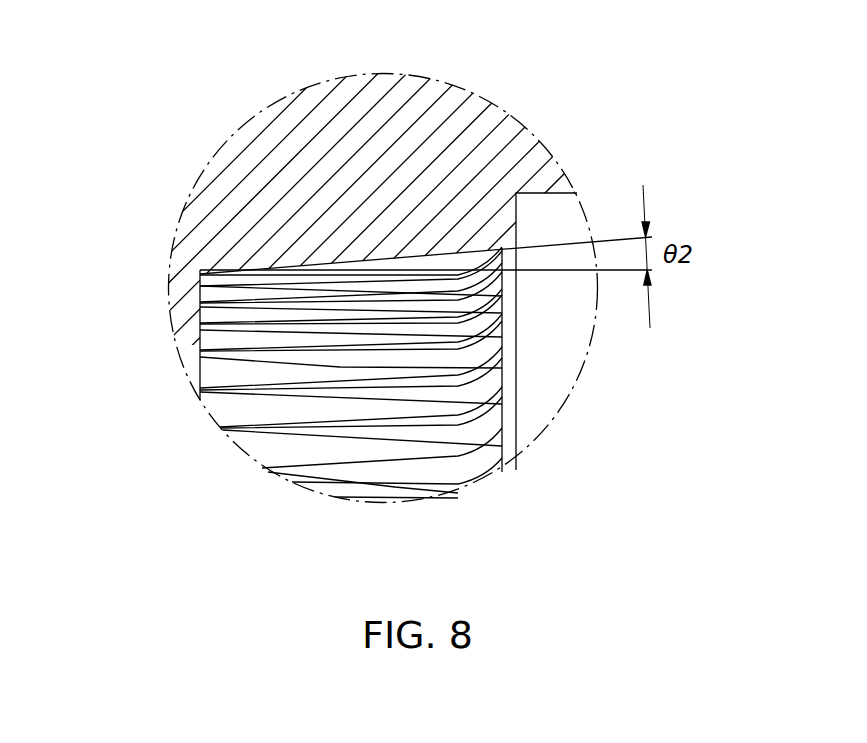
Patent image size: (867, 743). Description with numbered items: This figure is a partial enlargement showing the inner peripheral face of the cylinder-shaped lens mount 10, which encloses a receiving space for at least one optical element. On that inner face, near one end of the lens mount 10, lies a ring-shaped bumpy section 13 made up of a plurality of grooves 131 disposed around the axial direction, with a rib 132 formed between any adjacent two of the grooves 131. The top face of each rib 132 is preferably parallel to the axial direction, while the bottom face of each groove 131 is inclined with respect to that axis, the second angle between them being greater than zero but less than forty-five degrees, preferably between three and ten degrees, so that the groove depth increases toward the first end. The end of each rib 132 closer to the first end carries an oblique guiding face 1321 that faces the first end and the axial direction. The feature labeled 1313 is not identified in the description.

The lens mount 10 is at (300, 130).
The bumpy section 13 is at (213, 320).
The groove 131 is at (488, 414).
The thread flank 1313 is at (410, 256).
The rib 132 is at (357, 447).
The guiding face 1321 is at (475, 450).